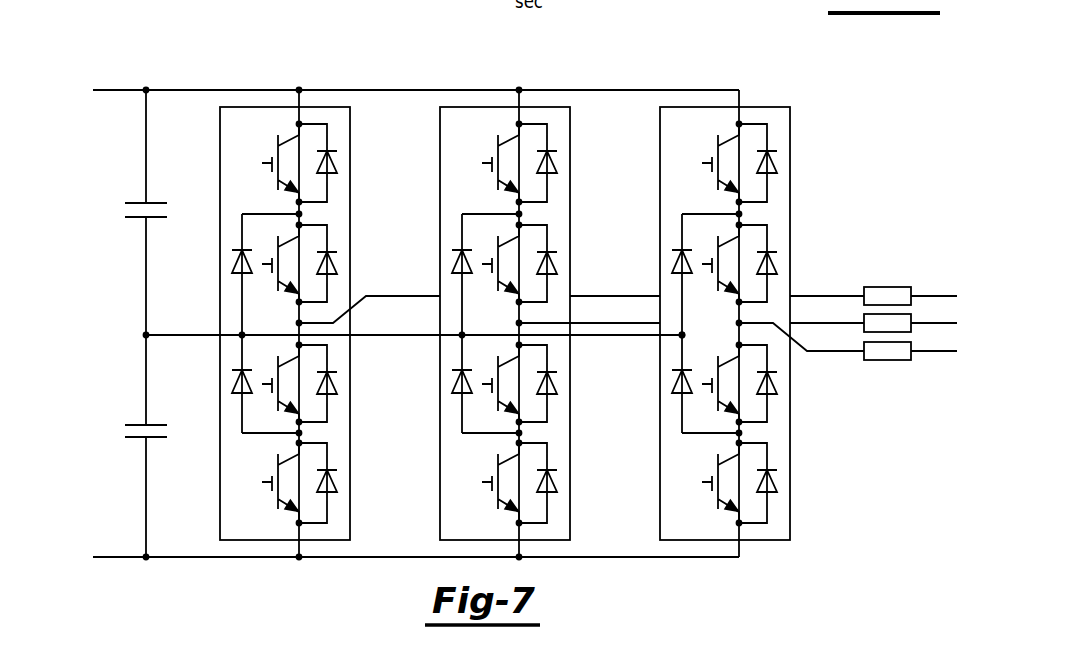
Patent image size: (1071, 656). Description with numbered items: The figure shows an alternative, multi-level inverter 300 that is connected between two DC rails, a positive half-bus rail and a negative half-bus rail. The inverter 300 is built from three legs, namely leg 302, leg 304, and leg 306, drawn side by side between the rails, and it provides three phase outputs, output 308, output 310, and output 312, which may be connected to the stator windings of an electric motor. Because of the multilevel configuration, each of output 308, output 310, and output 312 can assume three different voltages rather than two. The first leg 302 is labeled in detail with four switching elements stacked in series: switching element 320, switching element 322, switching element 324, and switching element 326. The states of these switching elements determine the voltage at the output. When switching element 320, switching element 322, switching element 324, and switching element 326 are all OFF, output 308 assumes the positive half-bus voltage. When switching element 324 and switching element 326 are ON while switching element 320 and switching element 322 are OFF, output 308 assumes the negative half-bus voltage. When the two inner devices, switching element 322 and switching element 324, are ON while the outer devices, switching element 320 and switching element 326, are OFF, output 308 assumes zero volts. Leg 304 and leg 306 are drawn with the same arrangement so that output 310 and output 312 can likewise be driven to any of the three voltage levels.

The inverter 300 is at (134, 26).
The leg 302 is at (261, 298).
The leg 304 is at (467, 106).
The leg 306 is at (687, 106).
The output 308 is at (930, 293).
The output 310 is at (943, 325).
The output 312 is at (930, 353).
The switching element 320 is at (269, 158).
The switching element 322 is at (270, 289).
The switching element 324 is at (270, 407).
The switching element 326 is at (270, 471).